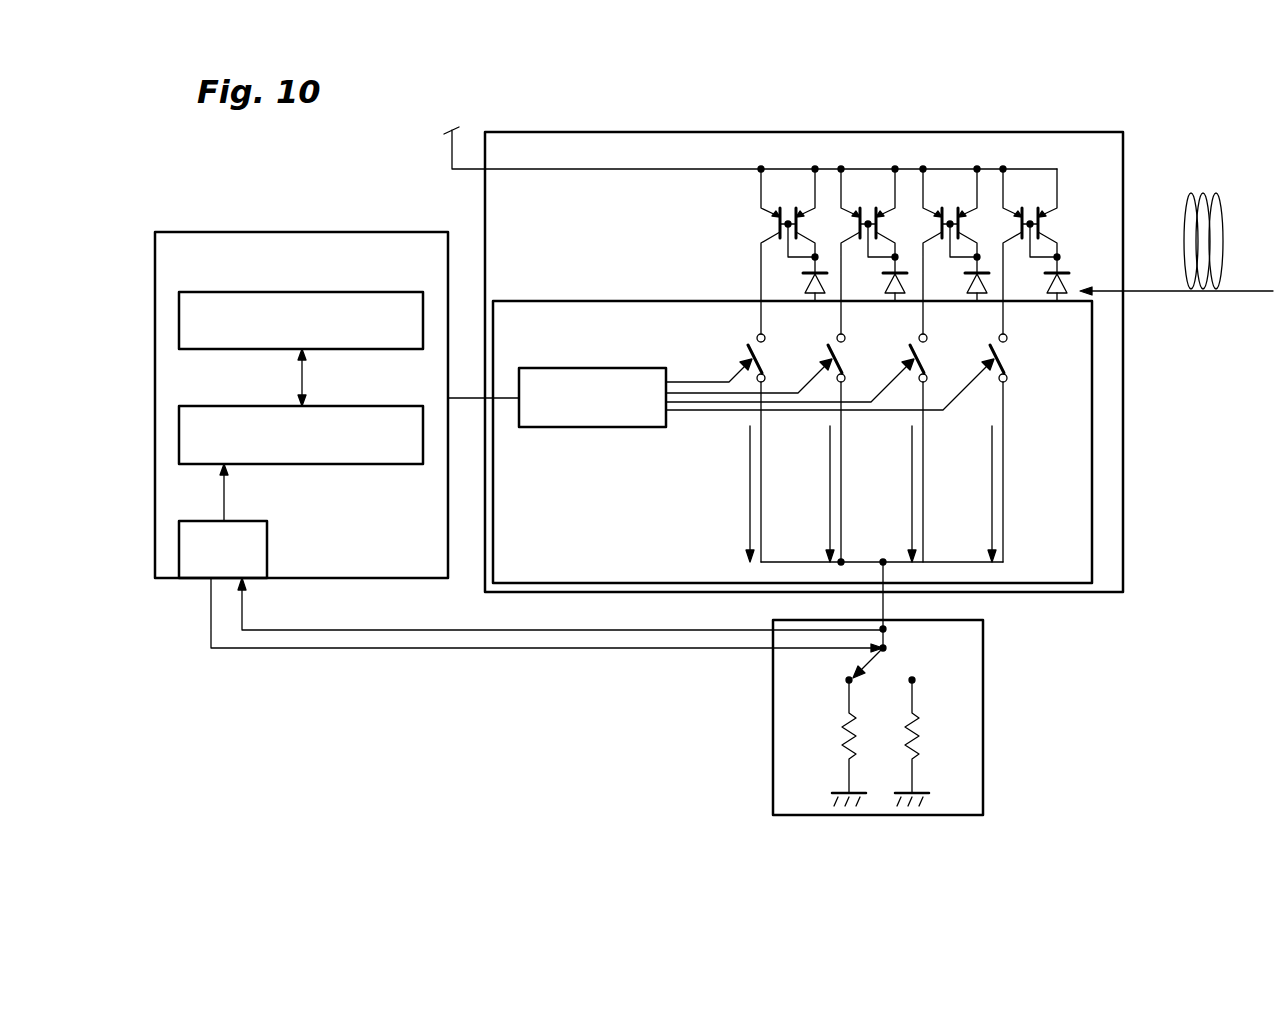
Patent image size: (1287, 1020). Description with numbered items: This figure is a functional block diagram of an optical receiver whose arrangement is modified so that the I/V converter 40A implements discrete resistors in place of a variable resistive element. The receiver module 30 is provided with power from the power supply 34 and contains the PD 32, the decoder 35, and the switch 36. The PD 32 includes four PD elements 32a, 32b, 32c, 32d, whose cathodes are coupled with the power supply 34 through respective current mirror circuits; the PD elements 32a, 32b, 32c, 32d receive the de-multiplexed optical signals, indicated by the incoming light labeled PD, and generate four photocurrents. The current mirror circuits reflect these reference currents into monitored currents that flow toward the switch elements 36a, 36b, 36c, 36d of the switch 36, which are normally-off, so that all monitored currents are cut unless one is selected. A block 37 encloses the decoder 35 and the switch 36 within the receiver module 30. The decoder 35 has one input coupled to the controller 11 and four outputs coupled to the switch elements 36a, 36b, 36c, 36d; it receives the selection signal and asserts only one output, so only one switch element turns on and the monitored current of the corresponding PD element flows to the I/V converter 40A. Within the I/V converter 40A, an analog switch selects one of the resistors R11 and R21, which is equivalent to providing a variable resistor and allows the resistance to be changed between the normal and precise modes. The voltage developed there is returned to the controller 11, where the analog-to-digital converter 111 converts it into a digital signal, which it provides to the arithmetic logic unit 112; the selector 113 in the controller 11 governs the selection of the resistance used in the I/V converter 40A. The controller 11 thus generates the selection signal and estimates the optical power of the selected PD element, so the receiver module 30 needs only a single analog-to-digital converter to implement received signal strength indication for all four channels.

The controller 11 is at (301, 379).
The analog-to-digital converter 111 is at (248, 521).
The arithmetic logic unit 112 is at (372, 406).
The selector 113 is at (372, 292).
The receiver module 30 is at (785, 132).
The power supply 34 is at (746, 136).
The PD 32 is at (932, 237).
The PD element 32a is at (816, 272).
The PD element 32b is at (896, 272).
The PD element 32c is at (978, 272).
The PD element 32d is at (1058, 272).
The decoder 35 is at (560, 368).
The switch 36 is at (876, 437).
The switch element 36a is at (762, 360).
The switch element 36b is at (842, 360).
The switch element 36c is at (924, 360).
The switch element 36d is at (1004, 360).
The switching circuit 37 is at (1092, 435).
The I/V converter 40A is at (911, 717).
The element PD is at (1175, 277).
The resistor R11 is at (841, 736).
The resistor R21 is at (921, 733).